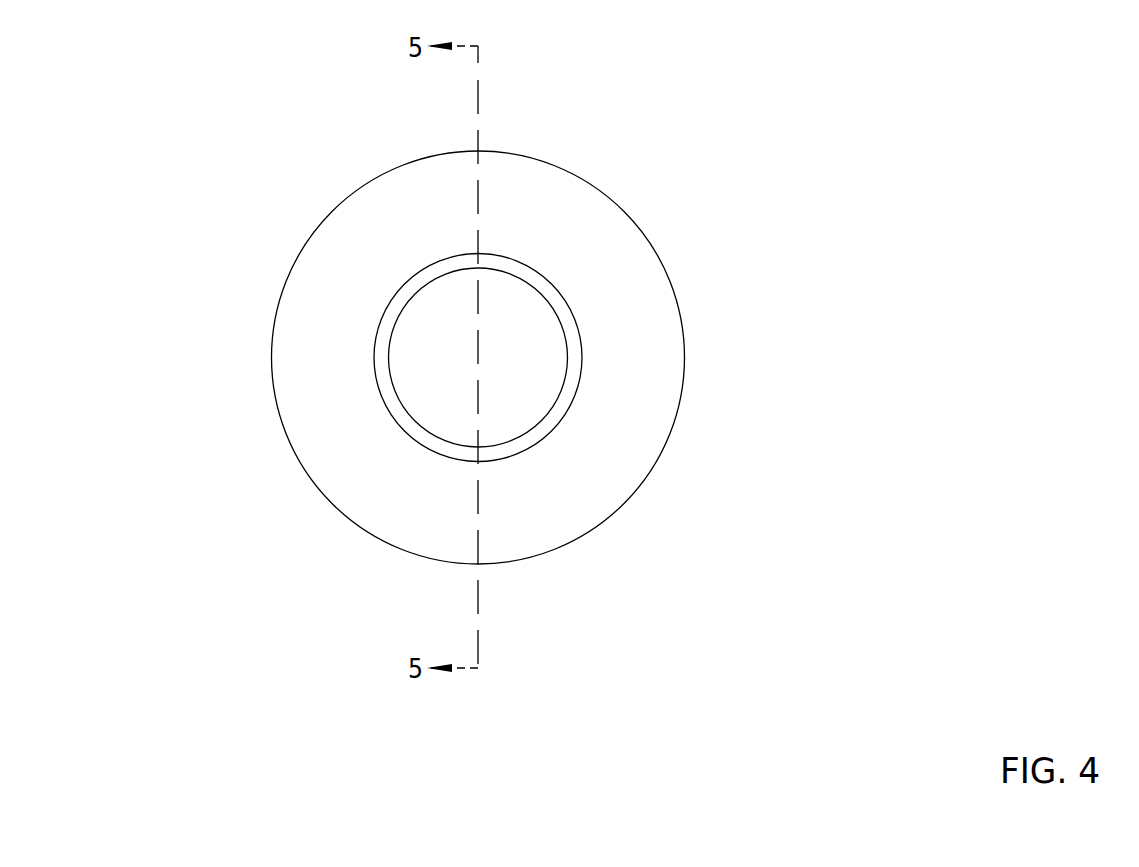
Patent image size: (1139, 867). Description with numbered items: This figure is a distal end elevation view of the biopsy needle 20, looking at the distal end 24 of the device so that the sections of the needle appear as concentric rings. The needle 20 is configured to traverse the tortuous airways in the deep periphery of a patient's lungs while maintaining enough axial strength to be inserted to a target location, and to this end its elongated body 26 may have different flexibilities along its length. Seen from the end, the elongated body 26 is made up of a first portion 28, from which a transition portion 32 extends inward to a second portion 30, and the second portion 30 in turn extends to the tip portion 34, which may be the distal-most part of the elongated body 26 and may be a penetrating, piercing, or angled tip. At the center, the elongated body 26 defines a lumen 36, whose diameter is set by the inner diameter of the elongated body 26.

The needle 20 is at (481, 340).
The distal end 24 is at (477, 462).
The elongated body 26 is at (508, 347).
The first portion 28 is at (387, 172).
The second portion 30 is at (428, 431).
The transition portion 32 is at (428, 400).
The tip portion 34 is at (496, 388).
The lumen 36 is at (442, 383).